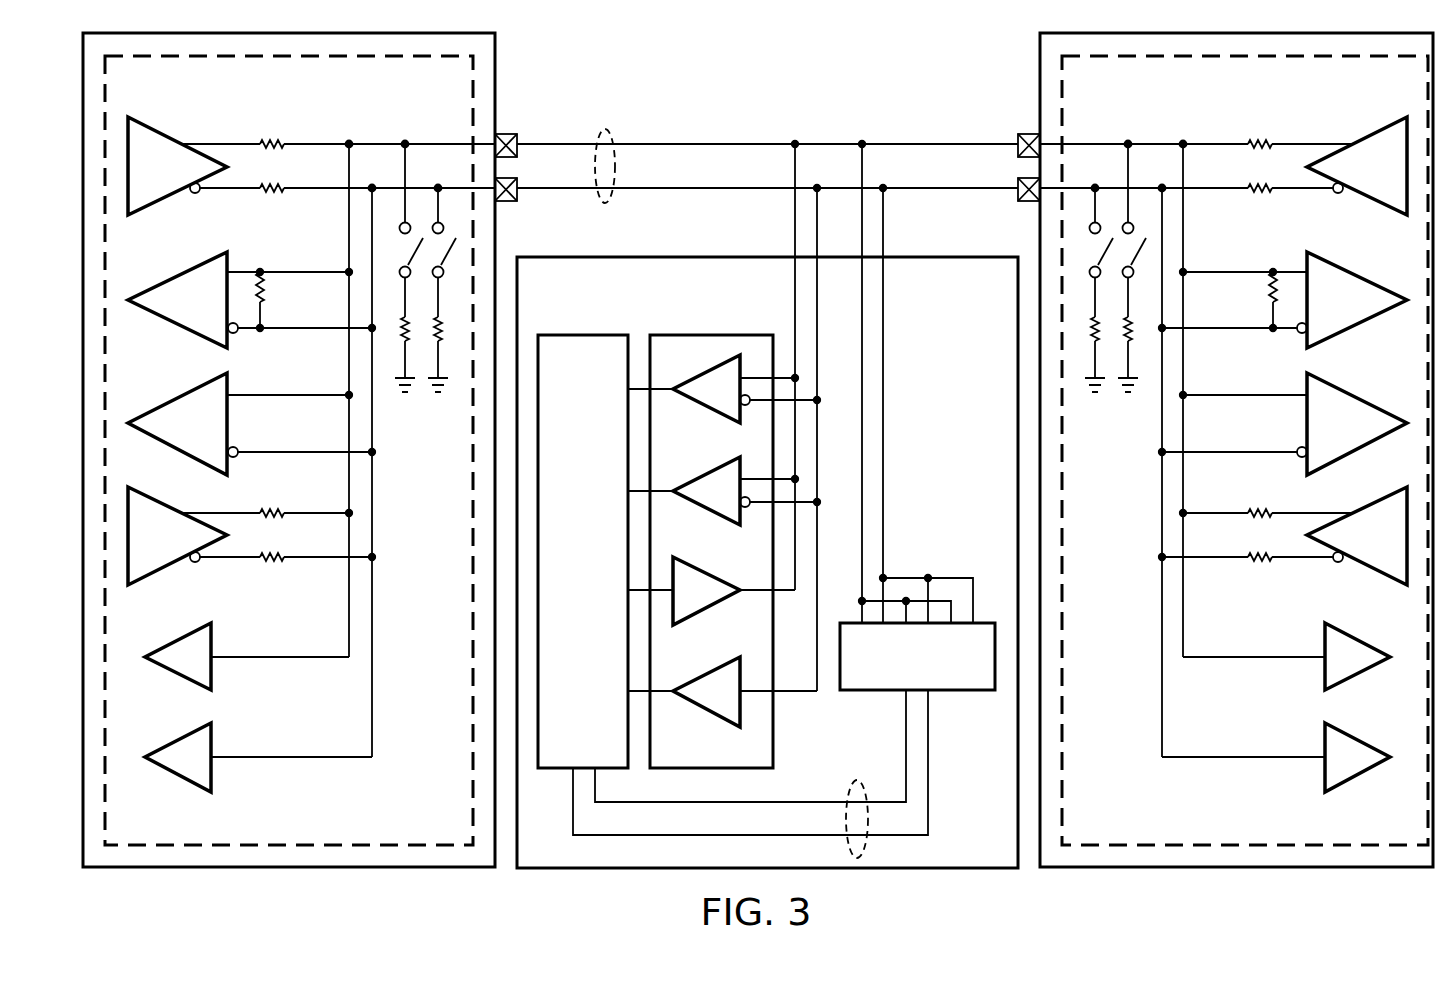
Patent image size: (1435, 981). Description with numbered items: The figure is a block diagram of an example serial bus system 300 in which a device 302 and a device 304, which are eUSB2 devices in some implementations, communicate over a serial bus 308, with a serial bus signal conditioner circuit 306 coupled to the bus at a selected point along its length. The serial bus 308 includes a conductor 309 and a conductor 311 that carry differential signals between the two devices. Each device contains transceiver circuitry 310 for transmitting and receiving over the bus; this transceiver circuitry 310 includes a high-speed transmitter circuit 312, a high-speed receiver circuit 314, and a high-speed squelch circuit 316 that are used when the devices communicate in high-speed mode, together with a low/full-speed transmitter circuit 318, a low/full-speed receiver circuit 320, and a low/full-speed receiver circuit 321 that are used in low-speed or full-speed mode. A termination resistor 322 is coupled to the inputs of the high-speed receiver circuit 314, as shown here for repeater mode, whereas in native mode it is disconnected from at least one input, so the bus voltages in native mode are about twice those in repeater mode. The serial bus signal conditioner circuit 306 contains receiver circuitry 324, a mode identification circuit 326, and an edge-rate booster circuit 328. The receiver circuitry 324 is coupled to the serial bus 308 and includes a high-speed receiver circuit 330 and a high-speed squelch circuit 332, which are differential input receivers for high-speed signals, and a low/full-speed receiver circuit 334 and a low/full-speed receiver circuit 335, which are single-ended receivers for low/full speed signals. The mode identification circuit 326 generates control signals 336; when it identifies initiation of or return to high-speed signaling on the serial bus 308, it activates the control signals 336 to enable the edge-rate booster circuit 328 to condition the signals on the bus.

The serial bus system 300 is at (932, 74).
The device 302 is at (268, 876).
The device 304 is at (1267, 876).
The serial bus signal conditioner circuit 306 is at (923, 878).
The serial bus 308 is at (606, 130).
The conductor 309 is at (672, 140).
The transceiver circuitry 310 is at (310, 106).
The conductor 311 is at (672, 193).
The high-speed transmitter circuit 312 is at (160, 130).
The high-speed receiver circuit 314 is at (178, 275).
The high-speed squelch circuit 316 is at (178, 395).
The low/full-speed transmitter circuit 318 is at (175, 565).
The low/full-speed receiver circuit 320 is at (178, 678).
The low/full-speed receiver circuit 321 is at (178, 778).
The termination resistor 322 is at (268, 303).
The receiver circuitry 324 is at (706, 324).
The mode identification circuit 326 is at (585, 333).
The edge-rate booster circuit 328 is at (958, 692).
The high-speed receiver circuit 330 is at (705, 412).
The high-speed squelch circuit 332 is at (705, 514).
The low/full-speed receiver circuit 334 is at (705, 613).
The low/full-speed receiver circuit 335 is at (705, 712).
The control signals 336 is at (858, 780).